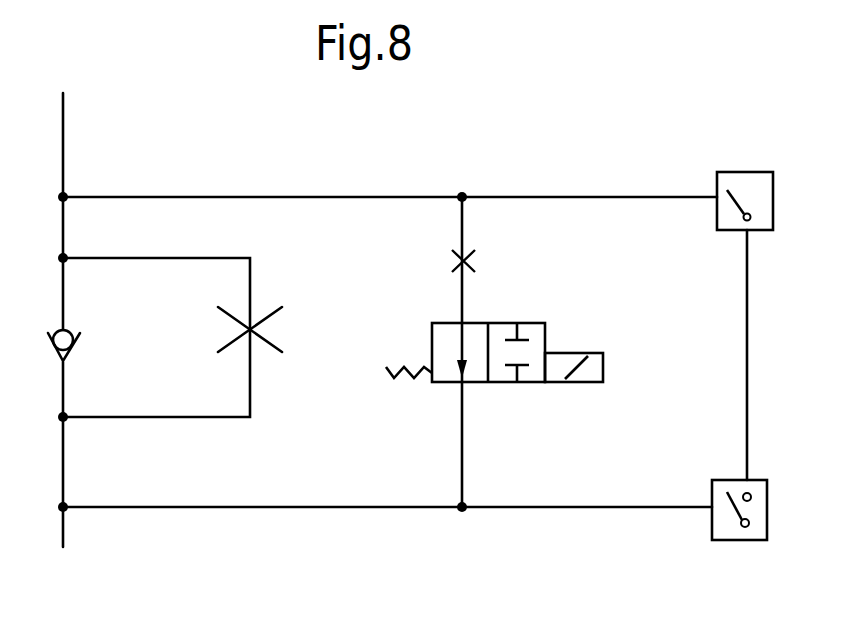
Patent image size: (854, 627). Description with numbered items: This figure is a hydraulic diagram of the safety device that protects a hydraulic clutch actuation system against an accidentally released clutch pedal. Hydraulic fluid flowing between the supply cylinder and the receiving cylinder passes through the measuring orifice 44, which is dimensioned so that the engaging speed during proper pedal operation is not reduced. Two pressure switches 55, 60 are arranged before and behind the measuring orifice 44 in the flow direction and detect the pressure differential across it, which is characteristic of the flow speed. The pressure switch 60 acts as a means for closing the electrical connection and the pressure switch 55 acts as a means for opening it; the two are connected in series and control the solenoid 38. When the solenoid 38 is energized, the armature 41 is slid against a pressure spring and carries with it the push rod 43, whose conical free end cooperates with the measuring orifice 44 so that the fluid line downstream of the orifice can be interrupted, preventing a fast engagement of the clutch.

The solenoid 38 is at (527, 328).
The armature 41 is at (527, 328).
The push rod 43 is at (515, 323).
The measuring orifice 44 is at (473, 259).
The pressure switch 55 is at (723, 528).
The pressure switch 60 is at (753, 190).